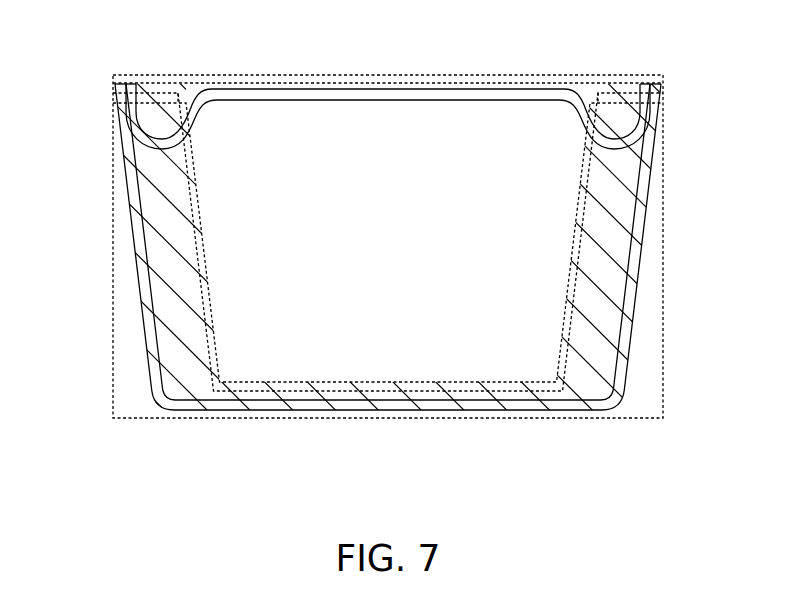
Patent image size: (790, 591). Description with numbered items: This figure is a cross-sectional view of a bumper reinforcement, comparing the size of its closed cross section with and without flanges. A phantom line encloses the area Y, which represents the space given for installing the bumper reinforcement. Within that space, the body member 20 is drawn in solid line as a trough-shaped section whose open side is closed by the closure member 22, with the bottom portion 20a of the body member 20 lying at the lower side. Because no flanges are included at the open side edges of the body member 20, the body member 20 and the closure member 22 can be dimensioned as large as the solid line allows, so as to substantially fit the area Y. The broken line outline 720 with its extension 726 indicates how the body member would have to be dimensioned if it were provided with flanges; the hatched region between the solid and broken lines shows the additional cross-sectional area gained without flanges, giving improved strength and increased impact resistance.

The body member 20 is at (128, 192).
The bottom portion of case 20a is at (352, 410).
The closure member 22 is at (347, 89).
The insulating member 720 is at (200, 207).
The extension portion of insulating member 726 is at (166, 93).
The area Y is at (664, 283).